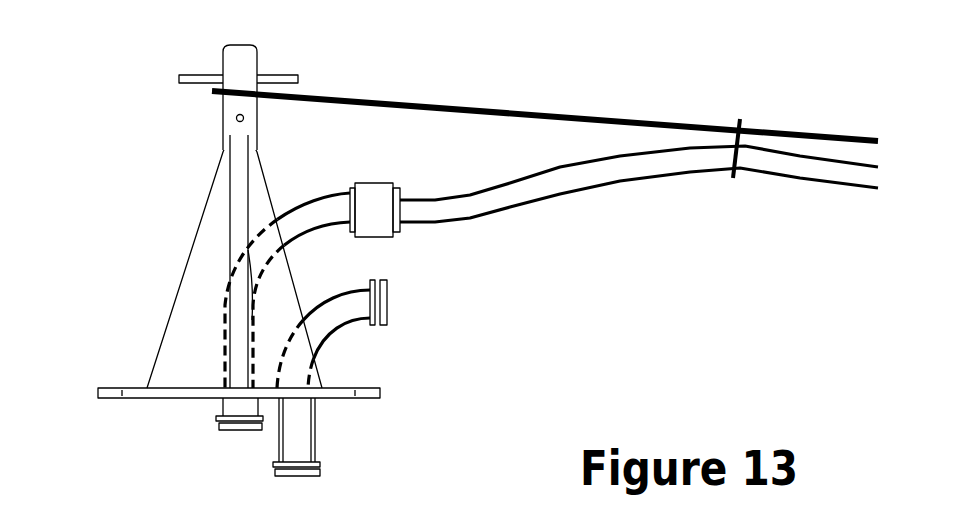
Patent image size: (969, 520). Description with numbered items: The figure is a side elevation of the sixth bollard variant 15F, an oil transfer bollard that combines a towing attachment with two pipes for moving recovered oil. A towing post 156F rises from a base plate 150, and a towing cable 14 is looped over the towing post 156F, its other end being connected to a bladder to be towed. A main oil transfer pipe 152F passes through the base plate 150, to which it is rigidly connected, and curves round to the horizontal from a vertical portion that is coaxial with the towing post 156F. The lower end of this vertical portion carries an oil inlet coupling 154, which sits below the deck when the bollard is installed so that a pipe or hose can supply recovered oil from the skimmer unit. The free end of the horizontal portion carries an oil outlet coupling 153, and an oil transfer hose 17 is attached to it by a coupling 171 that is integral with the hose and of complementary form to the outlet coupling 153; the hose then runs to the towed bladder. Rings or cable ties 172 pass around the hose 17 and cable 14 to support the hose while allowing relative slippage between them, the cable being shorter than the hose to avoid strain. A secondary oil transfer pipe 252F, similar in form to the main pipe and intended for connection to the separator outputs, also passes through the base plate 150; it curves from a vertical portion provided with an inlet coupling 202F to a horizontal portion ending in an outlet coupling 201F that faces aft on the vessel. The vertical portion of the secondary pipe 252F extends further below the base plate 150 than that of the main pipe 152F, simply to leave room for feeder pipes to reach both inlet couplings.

The sixth bollard variant 15F is at (146, 236).
The towing post 156F is at (225, 62).
The towing cable 14 is at (514, 110).
The base plate 150 is at (143, 389).
The main oil transfer pipe 152F is at (313, 207).
The oil outlet coupling 153 is at (351, 236).
The coupling 171 is at (375, 193).
The oil transfer hose 17 is at (562, 200).
The rings or cable ties 172 is at (735, 178).
The secondary oil transfer pipe 252F is at (337, 322).
The outlet coupling 201F is at (385, 303).
The oil inlet coupling 154 is at (218, 426).
The inlet coupling 202F is at (320, 473).